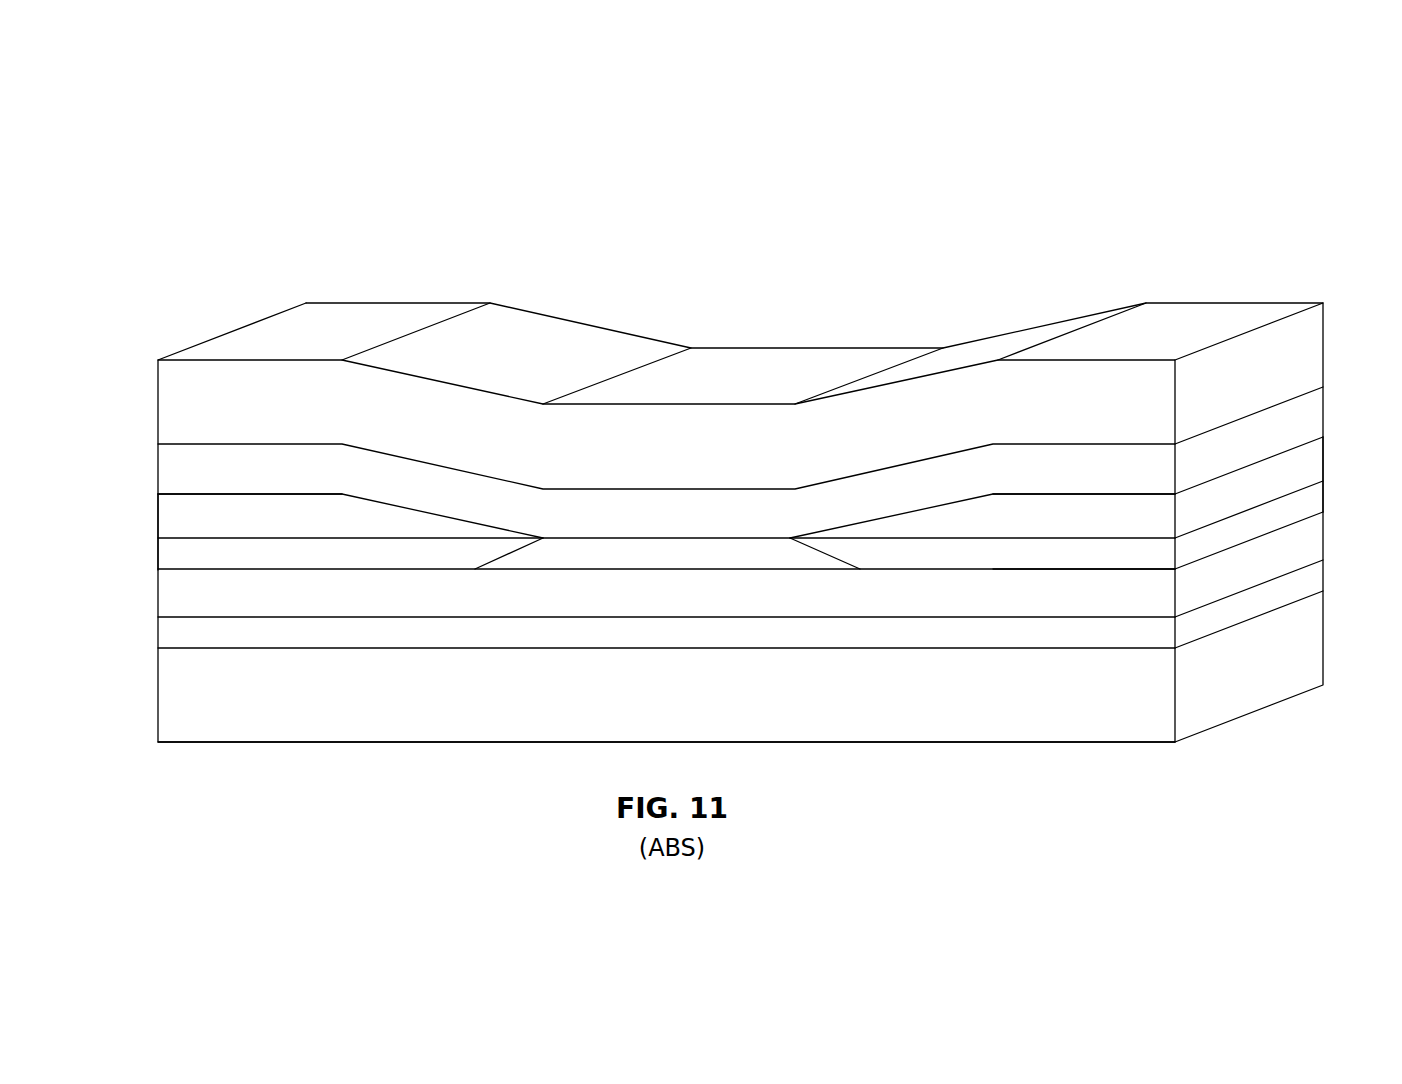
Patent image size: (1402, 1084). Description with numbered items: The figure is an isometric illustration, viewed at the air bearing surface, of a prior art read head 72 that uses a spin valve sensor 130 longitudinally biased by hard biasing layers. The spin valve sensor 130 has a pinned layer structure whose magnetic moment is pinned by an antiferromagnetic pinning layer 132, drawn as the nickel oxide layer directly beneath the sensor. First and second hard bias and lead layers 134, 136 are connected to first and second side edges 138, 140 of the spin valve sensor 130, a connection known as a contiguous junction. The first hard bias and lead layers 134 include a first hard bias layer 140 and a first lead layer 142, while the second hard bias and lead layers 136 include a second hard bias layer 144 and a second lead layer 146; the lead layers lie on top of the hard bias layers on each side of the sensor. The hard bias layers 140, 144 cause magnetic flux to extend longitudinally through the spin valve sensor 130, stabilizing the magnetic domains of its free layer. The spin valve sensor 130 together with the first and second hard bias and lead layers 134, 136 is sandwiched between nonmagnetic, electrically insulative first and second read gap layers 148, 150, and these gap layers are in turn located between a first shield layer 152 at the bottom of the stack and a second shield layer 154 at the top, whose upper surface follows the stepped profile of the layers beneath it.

The read head 72 is at (817, 322).
The spin valve sensor 130 is at (577, 538).
The antiferromagnetic pinning layer 132 is at (860, 598).
The first hard bias and lead layers 134 is at (152, 494).
The second hard bias and lead layers 136 is at (1330, 435).
The first side edge 138 is at (493, 561).
The first hard bias layer 140 is at (202, 557).
The first lead layer 142 is at (202, 507).
The second hard bias layer 144 is at (1122, 557).
The second lead layer 146 is at (1122, 507).
The first read gap layer 148 is at (443, 638).
The second read gap layer 150 is at (405, 475).
The first shield layer 152 is at (329, 720).
The second shield layer 154 is at (598, 335).